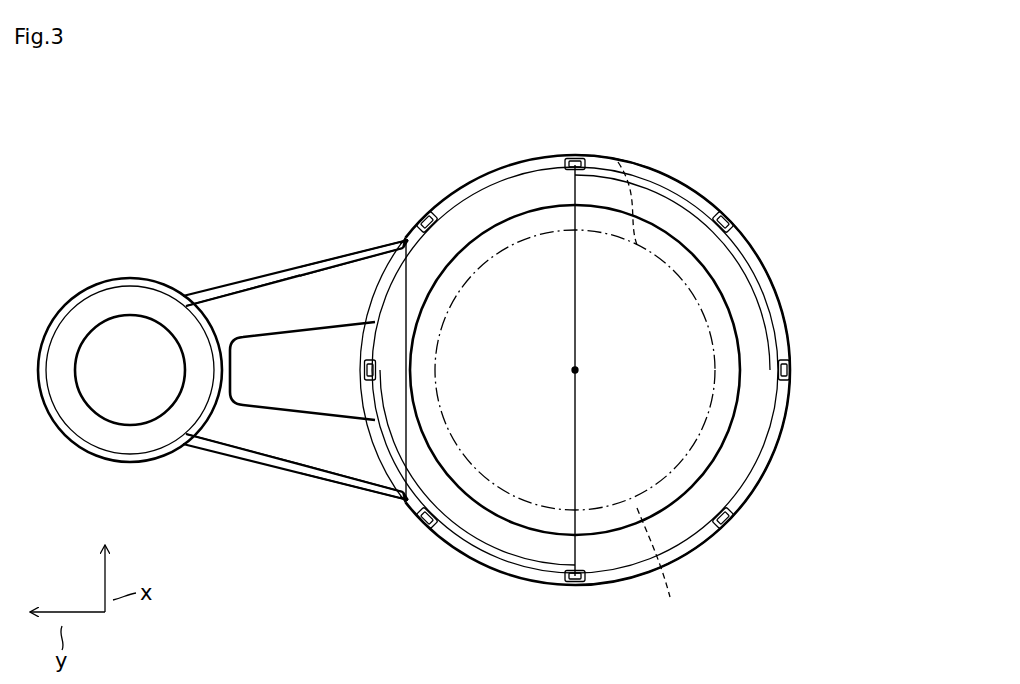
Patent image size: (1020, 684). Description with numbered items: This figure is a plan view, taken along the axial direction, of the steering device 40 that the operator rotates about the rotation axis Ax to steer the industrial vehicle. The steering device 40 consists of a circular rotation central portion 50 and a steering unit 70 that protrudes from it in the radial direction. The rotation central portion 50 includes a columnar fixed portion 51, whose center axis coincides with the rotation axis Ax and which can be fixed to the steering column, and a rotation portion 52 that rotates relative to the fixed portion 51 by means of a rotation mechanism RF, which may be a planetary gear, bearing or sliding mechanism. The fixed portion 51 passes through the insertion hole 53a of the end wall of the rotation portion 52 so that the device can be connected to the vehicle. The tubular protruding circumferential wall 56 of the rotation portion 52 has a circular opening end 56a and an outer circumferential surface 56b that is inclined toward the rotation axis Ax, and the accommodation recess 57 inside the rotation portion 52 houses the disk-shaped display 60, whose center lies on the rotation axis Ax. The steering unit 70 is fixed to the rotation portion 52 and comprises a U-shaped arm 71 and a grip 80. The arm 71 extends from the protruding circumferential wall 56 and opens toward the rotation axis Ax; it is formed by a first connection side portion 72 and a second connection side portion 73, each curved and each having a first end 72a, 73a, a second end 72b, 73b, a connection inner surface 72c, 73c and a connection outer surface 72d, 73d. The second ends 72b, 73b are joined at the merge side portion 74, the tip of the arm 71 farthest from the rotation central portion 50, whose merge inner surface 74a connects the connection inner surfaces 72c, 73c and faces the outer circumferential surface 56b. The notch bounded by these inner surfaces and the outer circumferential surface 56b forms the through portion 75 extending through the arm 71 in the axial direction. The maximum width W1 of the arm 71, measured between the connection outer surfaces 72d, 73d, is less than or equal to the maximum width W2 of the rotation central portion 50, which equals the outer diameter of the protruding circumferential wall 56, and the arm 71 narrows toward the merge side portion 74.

The steering device 40 is at (167, 98).
The steering unit 70 is at (166, 163).
The arm 71 is at (266, 186).
The first connection side portion 72 is at (262, 306).
The first end 72a is at (384, 287).
The second end 72b is at (226, 308).
The connection inner surface 72c is at (298, 337).
The connection outer surface 72d is at (343, 257).
The second connection side portion 73 is at (236, 440).
The first end 73a is at (378, 452).
The second end 73b is at (212, 443).
The connection inner surface 73c is at (307, 459).
The connection outer surface 73d is at (283, 471).
The merge side portion 74 is at (200, 448).
The merge inner surface 74a is at (228, 384).
The through portion 75 is at (272, 376).
The grip 80 is at (90, 313).
The rotation central portion 50 is at (771, 105).
The fixed portion 51 is at (715, 350).
The rotation portion 52 is at (755, 500).
The insertion hole 53a is at (672, 277).
The protruding circumferential wall 56 is at (760, 267).
The opening end 56a is at (668, 235).
The outer circumferential surface 56b is at (497, 573).
The accommodation recess 57 is at (730, 395).
The display 60 is at (633, 437).
The rotation mechanism RF is at (619, 160).
The maximum width of the arm W1 is at (408, 320).
The maximum width of the rotation central portion W2 is at (577, 273).
The rotation axis Ax is at (580, 369).